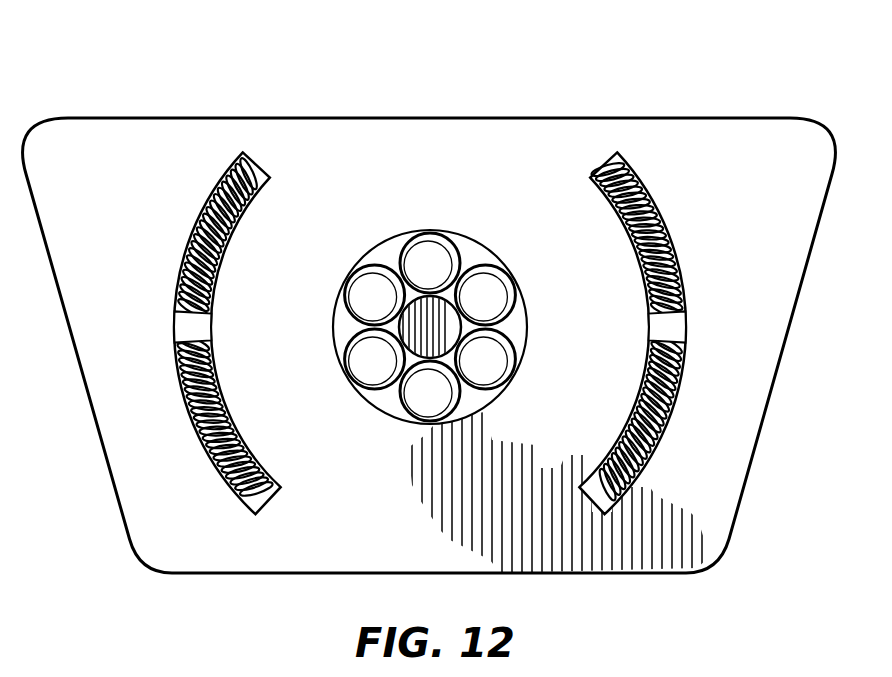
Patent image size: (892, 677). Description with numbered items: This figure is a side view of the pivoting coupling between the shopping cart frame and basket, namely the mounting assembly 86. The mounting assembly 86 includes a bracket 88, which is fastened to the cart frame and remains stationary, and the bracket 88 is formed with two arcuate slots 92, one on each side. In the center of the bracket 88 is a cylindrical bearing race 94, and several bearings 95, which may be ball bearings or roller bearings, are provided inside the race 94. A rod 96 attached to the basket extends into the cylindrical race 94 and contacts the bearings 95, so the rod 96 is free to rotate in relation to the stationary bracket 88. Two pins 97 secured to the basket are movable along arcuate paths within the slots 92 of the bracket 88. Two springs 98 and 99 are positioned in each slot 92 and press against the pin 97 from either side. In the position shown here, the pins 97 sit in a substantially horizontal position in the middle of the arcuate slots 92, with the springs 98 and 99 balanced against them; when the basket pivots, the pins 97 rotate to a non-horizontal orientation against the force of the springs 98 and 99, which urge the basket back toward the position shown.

The mounting assembly 86 is at (429, 296).
The bracket 88 is at (463, 138).
The arcuate slots 92 is at (427, 332).
The cylindrical bearing race 94 is at (423, 318).
The bearings 95 is at (425, 403).
The rod 96 is at (443, 313).
The pins 97 is at (192, 330).
The spring 98 is at (203, 213).
The spring 99 is at (206, 447).